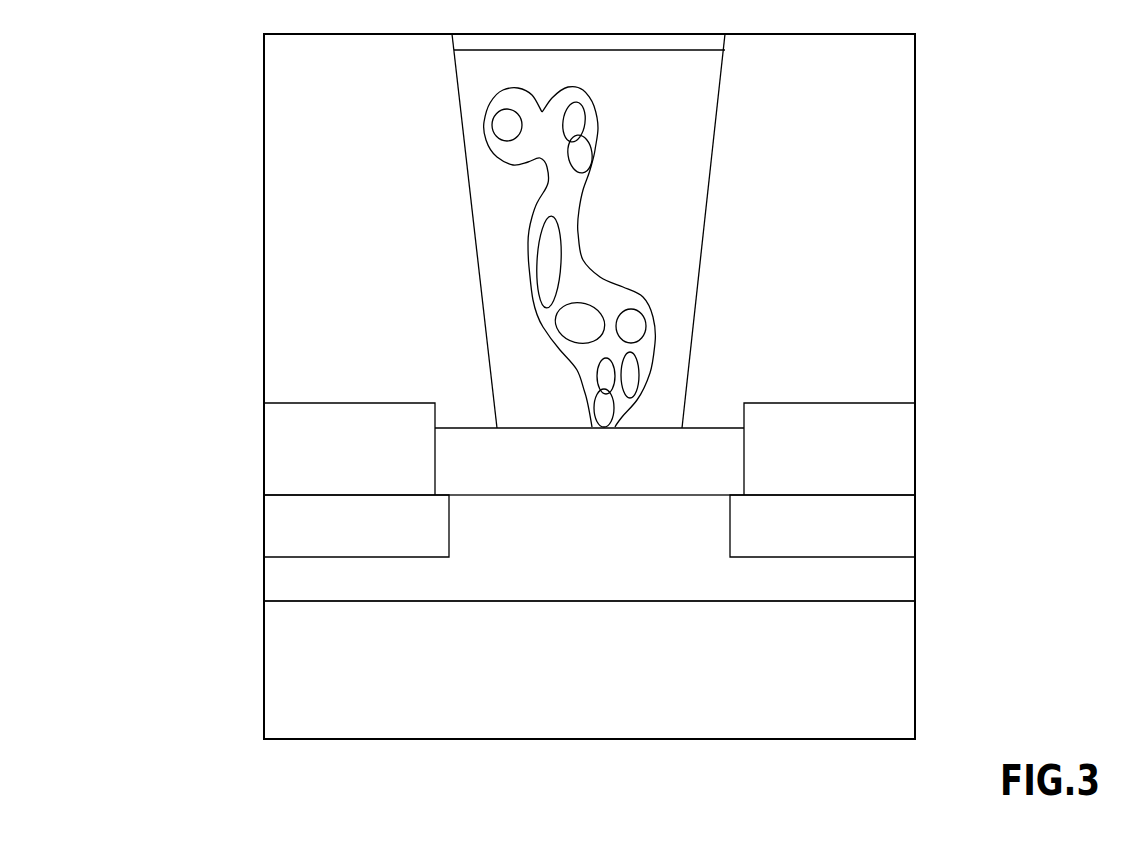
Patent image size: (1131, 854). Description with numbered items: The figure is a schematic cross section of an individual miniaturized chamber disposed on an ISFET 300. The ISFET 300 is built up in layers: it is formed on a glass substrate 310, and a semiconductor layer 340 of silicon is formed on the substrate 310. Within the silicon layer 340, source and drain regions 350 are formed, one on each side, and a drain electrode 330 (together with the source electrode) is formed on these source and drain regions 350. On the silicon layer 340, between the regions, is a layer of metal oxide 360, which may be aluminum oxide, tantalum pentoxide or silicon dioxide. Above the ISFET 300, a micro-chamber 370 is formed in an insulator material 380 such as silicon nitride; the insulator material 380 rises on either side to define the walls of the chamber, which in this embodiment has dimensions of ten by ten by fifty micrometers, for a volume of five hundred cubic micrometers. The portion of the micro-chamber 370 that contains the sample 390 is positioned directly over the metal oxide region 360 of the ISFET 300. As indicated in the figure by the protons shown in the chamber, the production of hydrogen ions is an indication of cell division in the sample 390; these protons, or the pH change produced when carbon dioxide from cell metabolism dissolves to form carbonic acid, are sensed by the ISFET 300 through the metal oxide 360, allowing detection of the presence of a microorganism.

The ISFET 300 is at (602, 775).
The glass substrate 310 is at (613, 678).
The drain electrode 330 is at (338, 462).
The semiconductor layer 340 is at (605, 592).
The source and drain regions 350 is at (423, 537).
The metal oxide layer 360 is at (615, 471).
The micro-chamber 370 is at (252, 237).
The insulator material 380 is at (805, 335).
The sample 390 is at (667, 161).